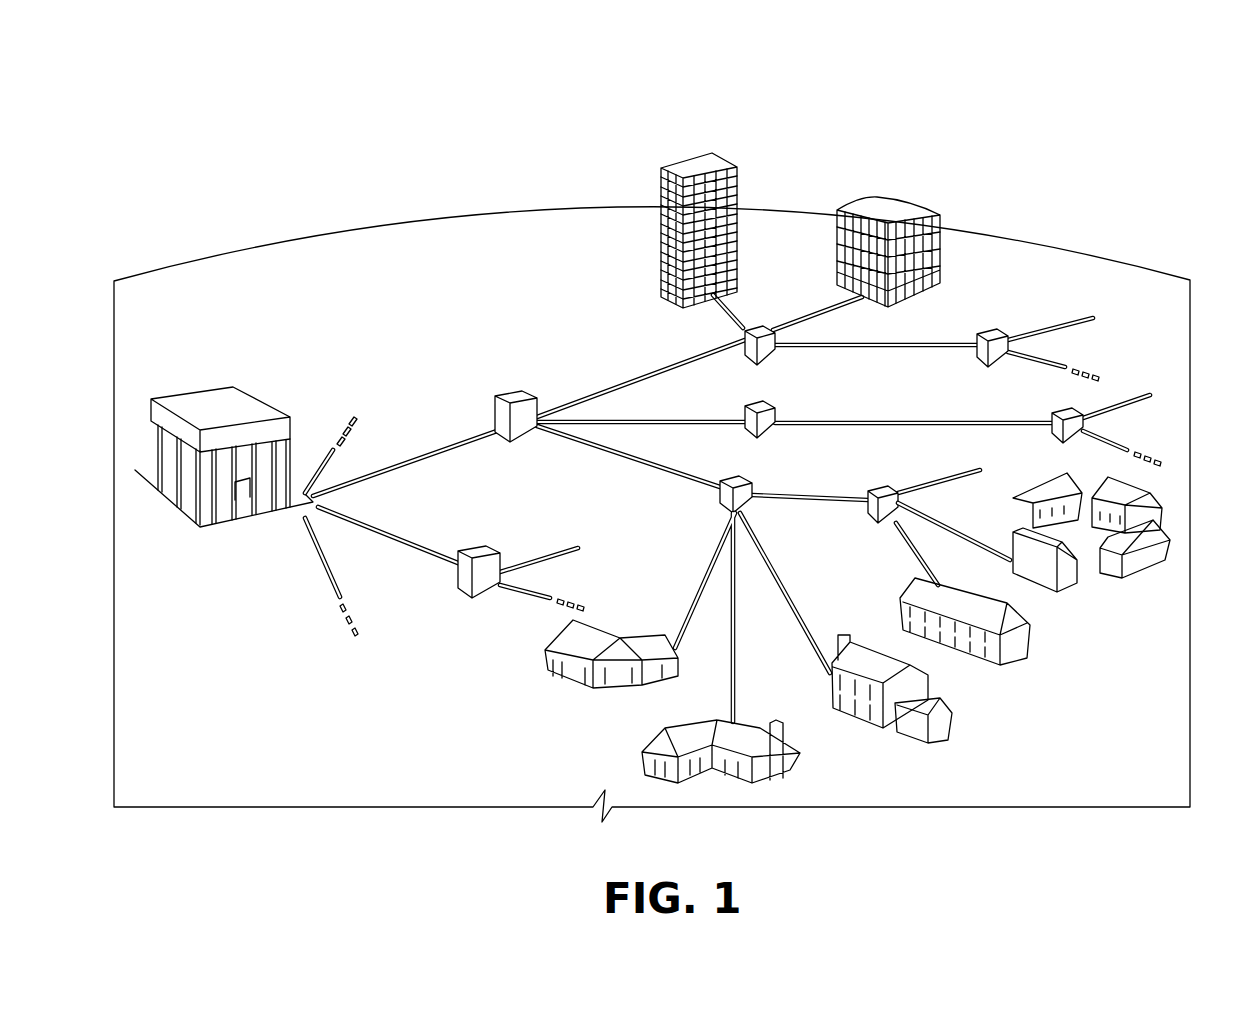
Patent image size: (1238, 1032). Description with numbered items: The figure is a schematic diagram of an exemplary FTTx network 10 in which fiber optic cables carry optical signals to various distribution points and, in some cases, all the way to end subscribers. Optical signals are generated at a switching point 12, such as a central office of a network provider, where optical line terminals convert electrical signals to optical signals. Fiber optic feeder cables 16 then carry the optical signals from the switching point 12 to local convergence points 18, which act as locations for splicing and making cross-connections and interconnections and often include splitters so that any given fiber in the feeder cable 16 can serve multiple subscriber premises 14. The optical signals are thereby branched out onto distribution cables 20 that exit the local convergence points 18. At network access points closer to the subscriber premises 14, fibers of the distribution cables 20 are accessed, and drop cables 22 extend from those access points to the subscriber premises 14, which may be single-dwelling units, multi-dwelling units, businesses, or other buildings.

The FTTx network 10 is at (1084, 124).
The switching point 12 is at (232, 388).
The subscriber premises 14 is at (838, 210).
The fiber optic feeder cable 16 is at (387, 528).
The local convergence point 18 is at (512, 394).
The distribution cable 20 is at (657, 420).
The drop cable 22 is at (723, 600).